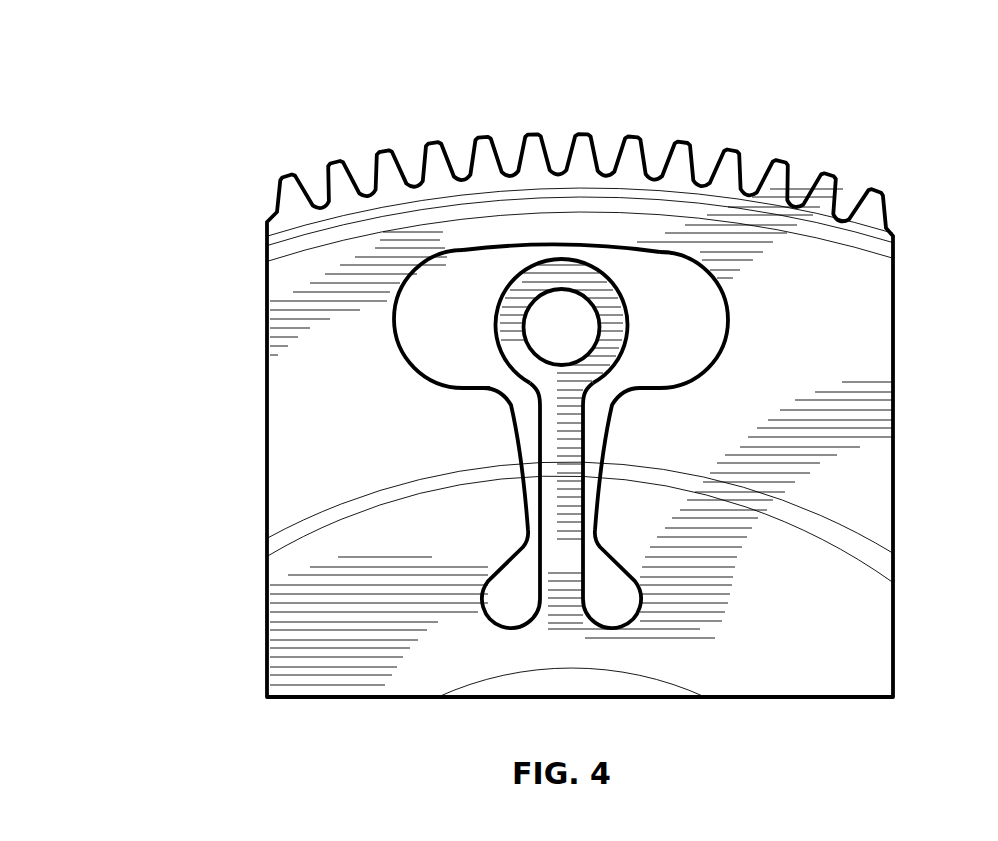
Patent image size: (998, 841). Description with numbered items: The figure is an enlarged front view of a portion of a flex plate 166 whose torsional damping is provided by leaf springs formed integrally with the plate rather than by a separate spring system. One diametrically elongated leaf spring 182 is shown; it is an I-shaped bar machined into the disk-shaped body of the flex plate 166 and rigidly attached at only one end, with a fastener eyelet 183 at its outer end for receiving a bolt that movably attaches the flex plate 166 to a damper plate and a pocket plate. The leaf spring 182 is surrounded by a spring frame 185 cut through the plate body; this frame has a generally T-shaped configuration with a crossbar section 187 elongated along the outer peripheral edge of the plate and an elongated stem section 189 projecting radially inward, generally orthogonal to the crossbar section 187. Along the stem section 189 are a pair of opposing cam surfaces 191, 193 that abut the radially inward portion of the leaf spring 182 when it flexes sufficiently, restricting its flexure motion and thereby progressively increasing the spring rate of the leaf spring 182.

The flex plate 166 is at (124, 96).
The leaf spring 182 is at (527, 267).
The fastener eyelet 183 is at (556, 326).
The spring frame 185 is at (630, 253).
The crossbar section 187 is at (762, 325).
The stem section 189 is at (762, 558).
The cam surface 191 is at (524, 462).
The cam surface 193 is at (599, 462).